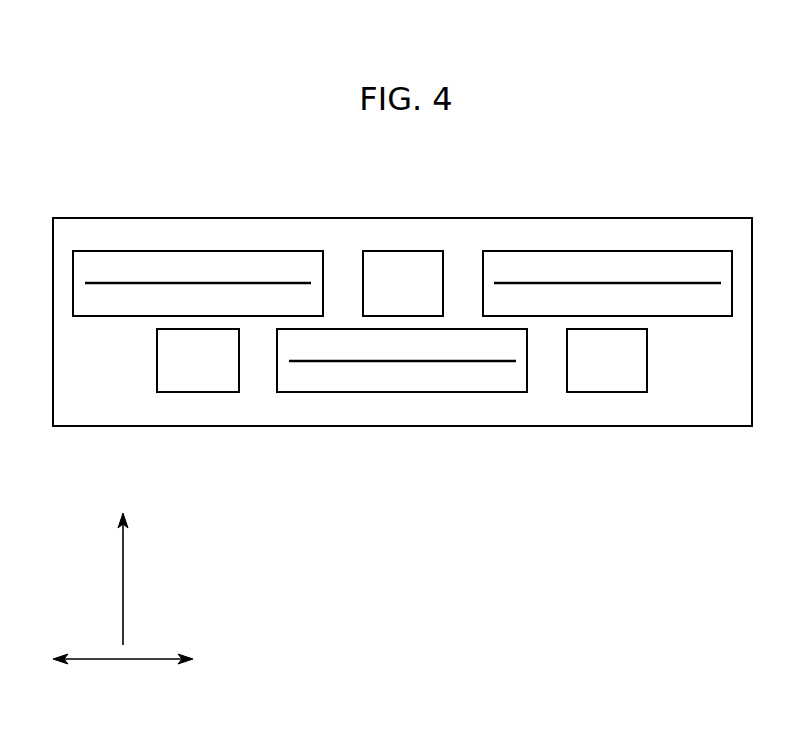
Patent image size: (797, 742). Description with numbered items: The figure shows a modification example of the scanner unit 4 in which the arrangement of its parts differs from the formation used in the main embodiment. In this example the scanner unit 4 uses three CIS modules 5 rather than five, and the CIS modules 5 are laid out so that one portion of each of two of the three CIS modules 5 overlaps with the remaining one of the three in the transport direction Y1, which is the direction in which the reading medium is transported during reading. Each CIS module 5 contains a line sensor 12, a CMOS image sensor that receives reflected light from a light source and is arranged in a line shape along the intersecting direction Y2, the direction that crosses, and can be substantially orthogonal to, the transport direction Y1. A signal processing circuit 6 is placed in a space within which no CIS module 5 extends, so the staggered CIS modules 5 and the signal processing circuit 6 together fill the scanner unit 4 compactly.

The scanner unit 4 is at (694, 212).
The CIS module 5 is at (190, 258).
The signal processing circuit 6 is at (403, 265).
The line sensor 12 is at (129, 283).
The transport direction Y1 is at (123, 552).
The intersecting direction Y2 is at (168, 655).